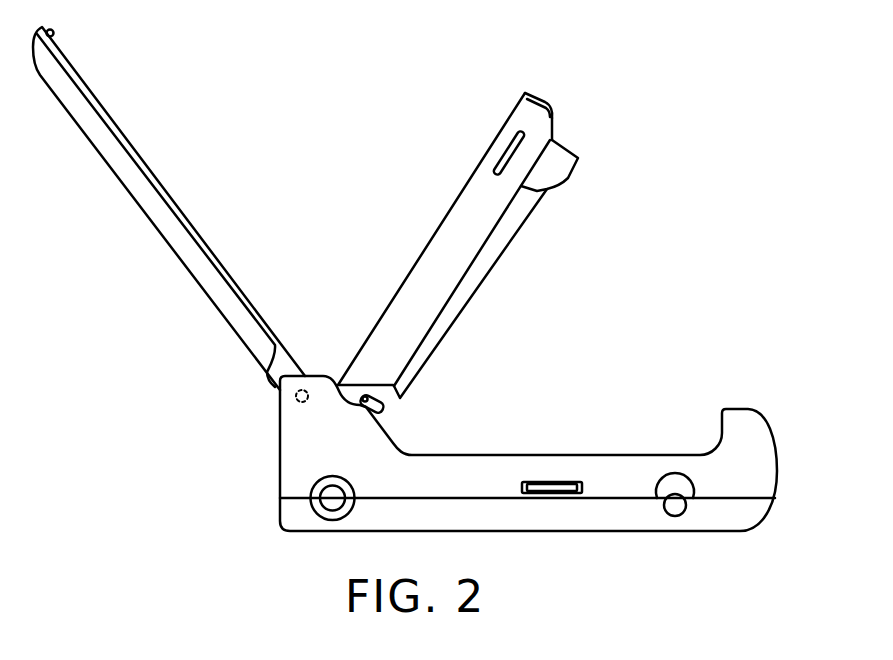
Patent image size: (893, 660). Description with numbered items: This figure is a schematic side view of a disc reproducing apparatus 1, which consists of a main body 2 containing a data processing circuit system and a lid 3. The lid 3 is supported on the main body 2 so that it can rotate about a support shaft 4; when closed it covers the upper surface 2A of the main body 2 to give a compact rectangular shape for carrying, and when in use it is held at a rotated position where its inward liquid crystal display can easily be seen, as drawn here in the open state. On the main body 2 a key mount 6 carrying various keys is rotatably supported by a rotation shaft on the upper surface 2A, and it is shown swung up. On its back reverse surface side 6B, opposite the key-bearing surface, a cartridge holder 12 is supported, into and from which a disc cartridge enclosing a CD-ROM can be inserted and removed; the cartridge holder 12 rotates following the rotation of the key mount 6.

The disc reproducing apparatus 1 is at (181, 473).
The main body 2 is at (552, 455).
The upper surface 2A is at (498, 217).
The lid 3 is at (134, 200).
The support shaft 4 is at (279, 412).
The key mount 6 is at (545, 99).
The back reverse surface side 6B is at (574, 137).
The cartridge holder 12 is at (485, 280).